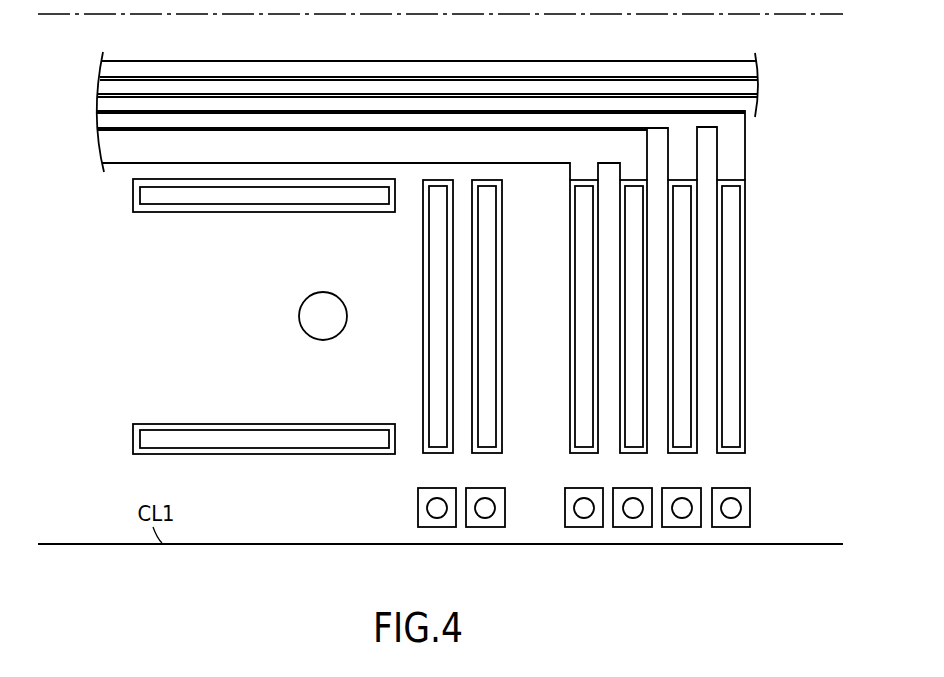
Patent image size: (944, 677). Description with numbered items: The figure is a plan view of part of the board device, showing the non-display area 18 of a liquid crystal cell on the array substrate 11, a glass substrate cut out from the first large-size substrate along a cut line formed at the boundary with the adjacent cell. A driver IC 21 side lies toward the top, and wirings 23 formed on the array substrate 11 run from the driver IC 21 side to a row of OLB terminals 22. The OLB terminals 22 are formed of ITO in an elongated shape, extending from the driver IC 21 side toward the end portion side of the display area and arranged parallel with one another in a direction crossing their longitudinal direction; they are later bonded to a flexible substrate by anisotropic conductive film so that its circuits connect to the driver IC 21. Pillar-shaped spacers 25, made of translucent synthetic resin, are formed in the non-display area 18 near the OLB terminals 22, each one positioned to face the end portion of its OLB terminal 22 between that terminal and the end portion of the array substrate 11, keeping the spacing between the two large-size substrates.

The array substrate 11 is at (252, 545).
The non-display area 18 is at (793, 526).
The driver IC 21 is at (819, 14).
The OLB terminal 22 is at (438, 391).
The wiring 23 is at (182, 145).
The pillar-shaped spacer 25 is at (438, 527).